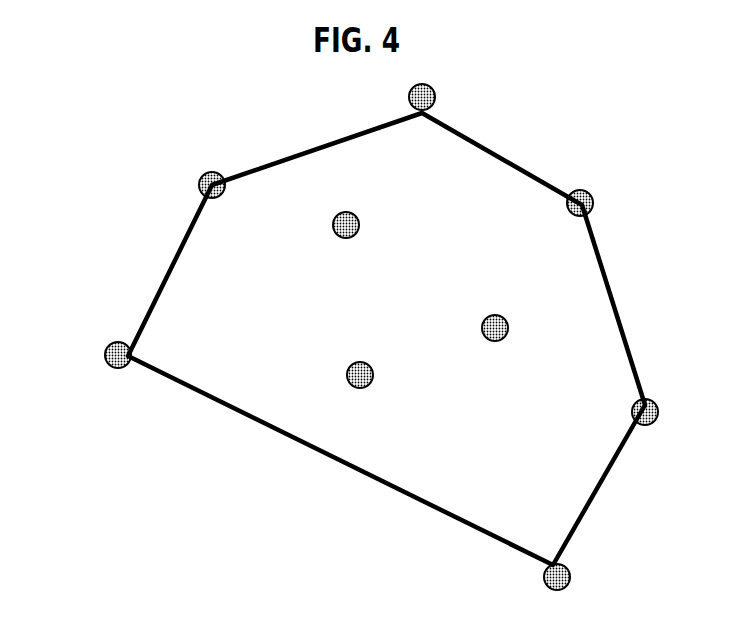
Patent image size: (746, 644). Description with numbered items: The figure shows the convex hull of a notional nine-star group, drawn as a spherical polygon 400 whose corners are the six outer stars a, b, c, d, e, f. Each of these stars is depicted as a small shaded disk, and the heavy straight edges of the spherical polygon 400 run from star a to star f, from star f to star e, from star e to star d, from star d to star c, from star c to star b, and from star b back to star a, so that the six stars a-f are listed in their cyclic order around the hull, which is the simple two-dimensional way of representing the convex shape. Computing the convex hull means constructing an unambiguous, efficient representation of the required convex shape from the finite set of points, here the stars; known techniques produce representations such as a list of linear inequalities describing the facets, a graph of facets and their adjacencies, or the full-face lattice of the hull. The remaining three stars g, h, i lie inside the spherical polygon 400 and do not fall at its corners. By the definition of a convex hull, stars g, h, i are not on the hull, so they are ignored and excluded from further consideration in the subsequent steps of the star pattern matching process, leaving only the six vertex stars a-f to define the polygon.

The spherical polygon 400 is at (527, 160).
The star a is at (442, 97).
The star b is at (222, 168).
The star c is at (108, 355).
The star d is at (570, 570).
The star e is at (657, 405).
The star f is at (592, 198).
The star g is at (497, 317).
The star h is at (373, 388).
The star i is at (333, 243).